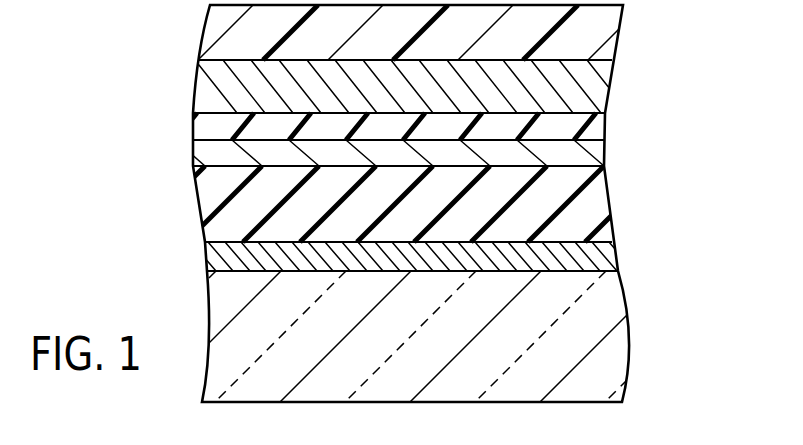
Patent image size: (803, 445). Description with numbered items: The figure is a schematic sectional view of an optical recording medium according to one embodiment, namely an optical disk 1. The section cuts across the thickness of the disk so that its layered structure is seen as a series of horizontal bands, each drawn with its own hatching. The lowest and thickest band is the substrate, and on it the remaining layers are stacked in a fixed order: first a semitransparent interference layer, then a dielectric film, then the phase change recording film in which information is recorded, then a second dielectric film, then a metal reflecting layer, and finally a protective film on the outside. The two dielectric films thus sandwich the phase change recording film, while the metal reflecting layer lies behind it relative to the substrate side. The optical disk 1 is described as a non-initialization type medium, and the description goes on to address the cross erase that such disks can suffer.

The optical disk 1 is at (680, 62).